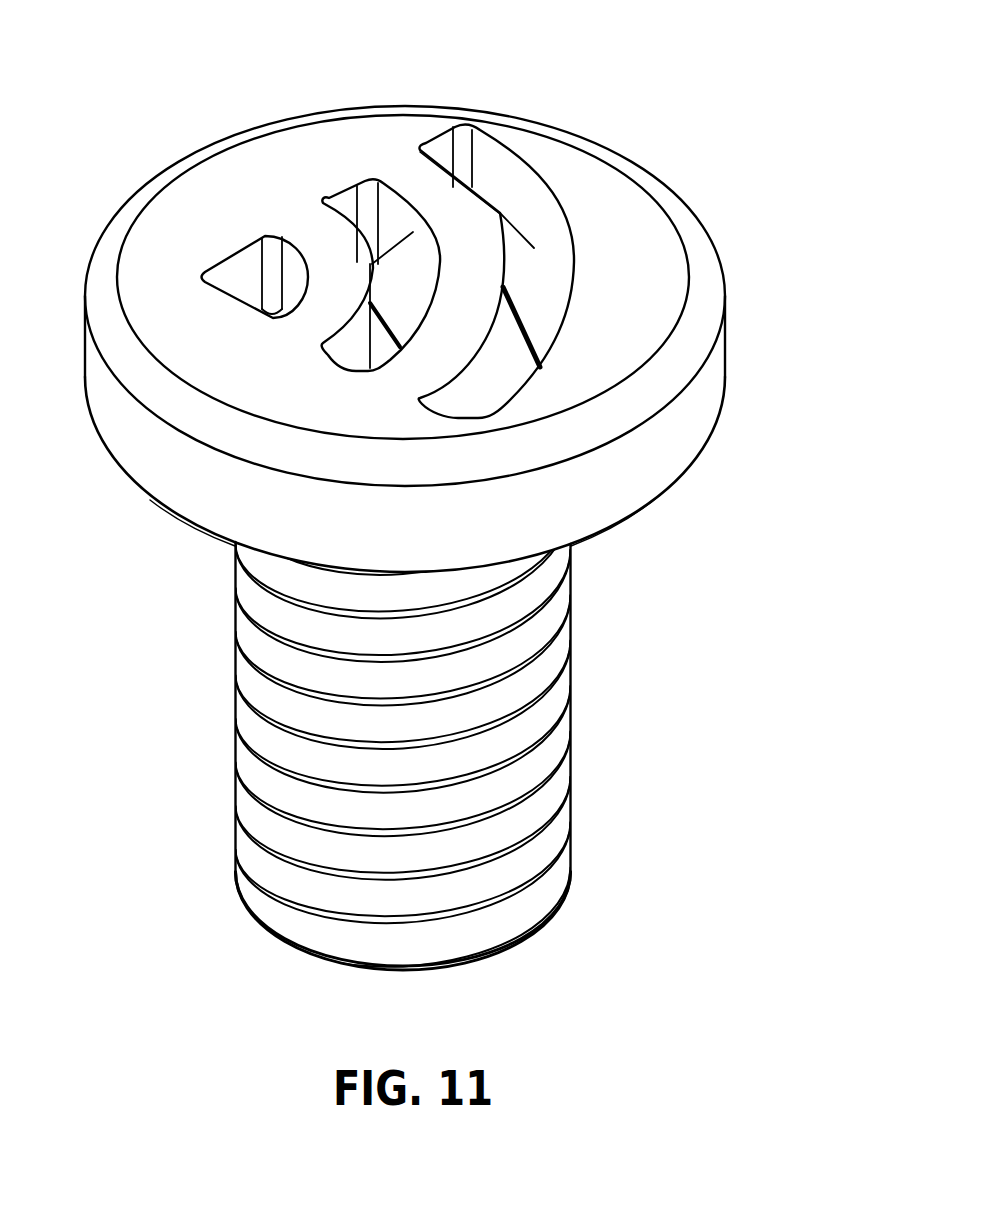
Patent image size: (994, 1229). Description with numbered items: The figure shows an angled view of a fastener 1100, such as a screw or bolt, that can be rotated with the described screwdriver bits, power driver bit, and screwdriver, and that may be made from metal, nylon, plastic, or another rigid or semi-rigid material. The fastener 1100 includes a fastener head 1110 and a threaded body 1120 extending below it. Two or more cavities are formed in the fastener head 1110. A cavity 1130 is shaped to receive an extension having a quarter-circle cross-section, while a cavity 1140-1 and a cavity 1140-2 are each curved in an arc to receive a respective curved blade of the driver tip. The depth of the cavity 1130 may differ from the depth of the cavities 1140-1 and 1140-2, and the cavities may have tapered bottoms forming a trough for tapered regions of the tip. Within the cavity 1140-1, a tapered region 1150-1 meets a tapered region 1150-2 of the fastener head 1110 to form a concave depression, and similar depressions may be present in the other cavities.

The fastener 1100 is at (693, 98).
The fastener head 1110 is at (712, 240).
The threaded body 1120 is at (571, 680).
The cavity 1130 is at (237, 257).
The cavity 1140-1 is at (573, 244).
The cavity 1140-2 is at (344, 196).
The tapered region 1150-1 is at (517, 270).
The tapered region 1150-2 is at (520, 352).